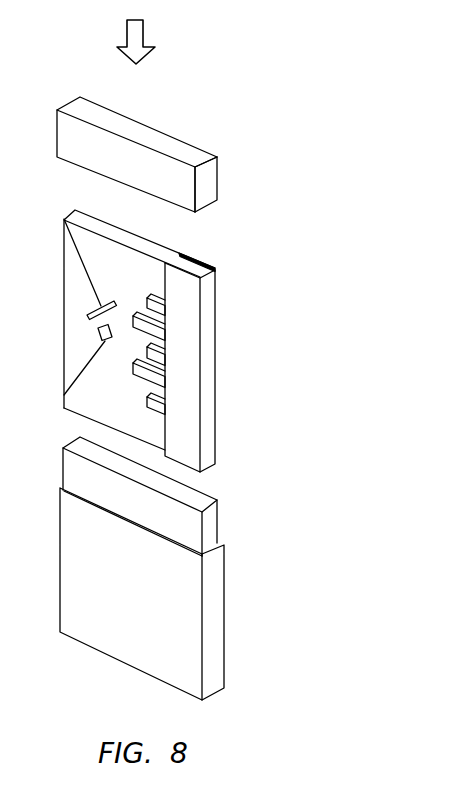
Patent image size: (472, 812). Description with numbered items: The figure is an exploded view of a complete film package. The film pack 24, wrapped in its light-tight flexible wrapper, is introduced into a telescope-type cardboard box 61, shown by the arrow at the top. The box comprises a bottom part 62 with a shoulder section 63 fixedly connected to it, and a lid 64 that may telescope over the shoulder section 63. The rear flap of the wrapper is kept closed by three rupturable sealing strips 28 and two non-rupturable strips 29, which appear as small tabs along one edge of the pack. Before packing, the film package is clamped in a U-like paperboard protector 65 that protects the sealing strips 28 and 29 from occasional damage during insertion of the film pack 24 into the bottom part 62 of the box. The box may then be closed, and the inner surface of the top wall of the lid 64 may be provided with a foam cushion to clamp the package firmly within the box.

The telescope-type cardboard box 61 is at (135, 36).
The lid 64 is at (212, 185).
The film pack 24 is at (157, 248).
The U-like paperboard protector 65 is at (208, 378).
The rupturable sealing strips 28 is at (157, 365).
The non-rupturable strips 29 is at (162, 383).
The shoulder section 63 is at (213, 532).
The bottom part 62 is at (213, 632).